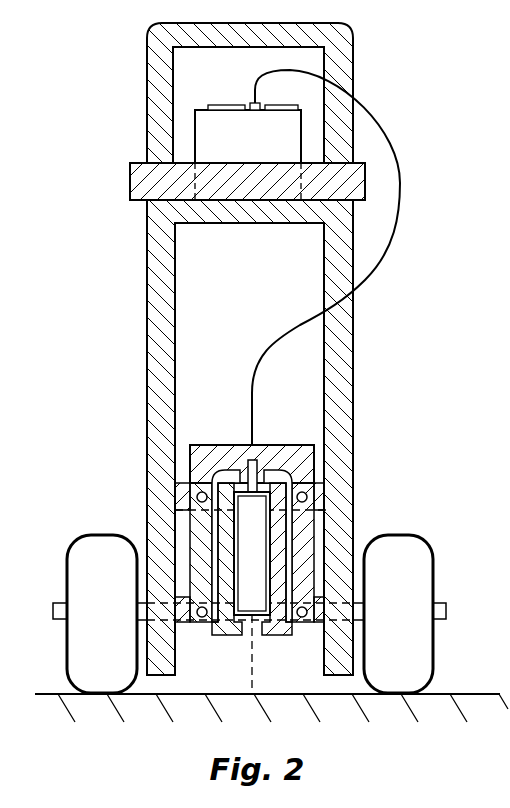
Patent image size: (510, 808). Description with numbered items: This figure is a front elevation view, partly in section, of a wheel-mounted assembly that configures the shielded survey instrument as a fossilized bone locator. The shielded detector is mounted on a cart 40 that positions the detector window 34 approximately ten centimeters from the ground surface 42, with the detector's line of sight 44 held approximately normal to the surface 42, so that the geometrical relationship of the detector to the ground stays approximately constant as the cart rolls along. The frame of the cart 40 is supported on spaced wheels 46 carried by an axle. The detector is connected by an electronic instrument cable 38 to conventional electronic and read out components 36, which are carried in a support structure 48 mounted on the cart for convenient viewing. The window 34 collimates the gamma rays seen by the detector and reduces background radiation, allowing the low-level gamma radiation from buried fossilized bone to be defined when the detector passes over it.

The detector window 34 is at (255, 630).
The electronic and read out components 36 is at (293, 131).
The electronic instrument cable 38 is at (386, 244).
The cart 40 is at (354, 53).
The ground surface 42 is at (462, 694).
The line of sight 44 is at (252, 673).
The wheels 46 is at (107, 550).
The support structure 48 is at (366, 180).